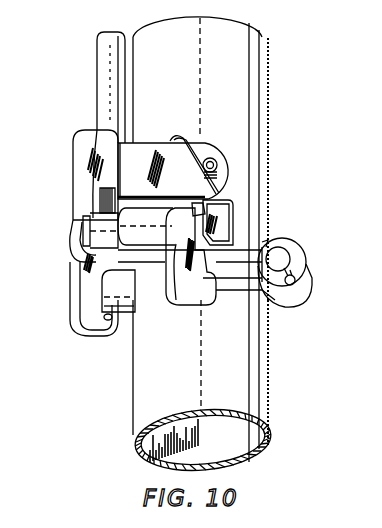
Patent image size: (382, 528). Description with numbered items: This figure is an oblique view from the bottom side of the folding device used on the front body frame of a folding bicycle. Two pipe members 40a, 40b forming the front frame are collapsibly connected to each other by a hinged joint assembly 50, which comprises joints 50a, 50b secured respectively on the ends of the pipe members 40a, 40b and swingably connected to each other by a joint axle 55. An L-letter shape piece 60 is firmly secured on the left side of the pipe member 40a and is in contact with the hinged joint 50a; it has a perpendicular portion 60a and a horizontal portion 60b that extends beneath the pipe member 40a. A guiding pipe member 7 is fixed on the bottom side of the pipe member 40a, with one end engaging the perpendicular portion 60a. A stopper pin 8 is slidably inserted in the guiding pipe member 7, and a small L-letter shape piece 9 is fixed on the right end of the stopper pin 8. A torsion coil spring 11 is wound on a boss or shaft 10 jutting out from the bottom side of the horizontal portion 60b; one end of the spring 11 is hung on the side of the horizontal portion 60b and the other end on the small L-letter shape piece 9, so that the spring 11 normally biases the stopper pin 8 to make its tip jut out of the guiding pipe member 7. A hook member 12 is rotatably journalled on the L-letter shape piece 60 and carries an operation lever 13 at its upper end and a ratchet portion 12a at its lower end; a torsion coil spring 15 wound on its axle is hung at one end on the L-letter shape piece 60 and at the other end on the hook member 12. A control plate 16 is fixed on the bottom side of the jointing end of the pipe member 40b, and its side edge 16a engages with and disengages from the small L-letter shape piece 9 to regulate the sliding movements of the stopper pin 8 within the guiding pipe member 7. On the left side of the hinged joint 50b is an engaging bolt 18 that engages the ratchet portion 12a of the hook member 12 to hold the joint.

The guiding pipe member 7 is at (114, 258).
The stopper pin 8 is at (86, 256).
The small L-letter shape piece 9 is at (228, 205).
The boss or shaft 10 is at (210, 158).
The torsion coil spring 11 is at (220, 163).
The hook member 12 is at (82, 160).
The ratchet portion 12a is at (86, 322).
The operation lever 13 is at (103, 90).
The torsion coil spring 15 is at (101, 197).
The control plate 16 is at (178, 275).
The side edge 16a is at (197, 208).
The engaging bolt 18 is at (126, 316).
The pipe member 40a is at (249, 68).
The pipe member 40b is at (251, 386).
The hinged joint assembly 50 is at (290, 246).
The hinged joint 50a is at (246, 248).
The hinged joint 50b is at (246, 272).
The joint axle 55 is at (295, 270).
The L-letter shape piece 60 is at (138, 162).
The perpendicular portion 60a is at (73, 217).
The horizontal portion 60b is at (151, 160).